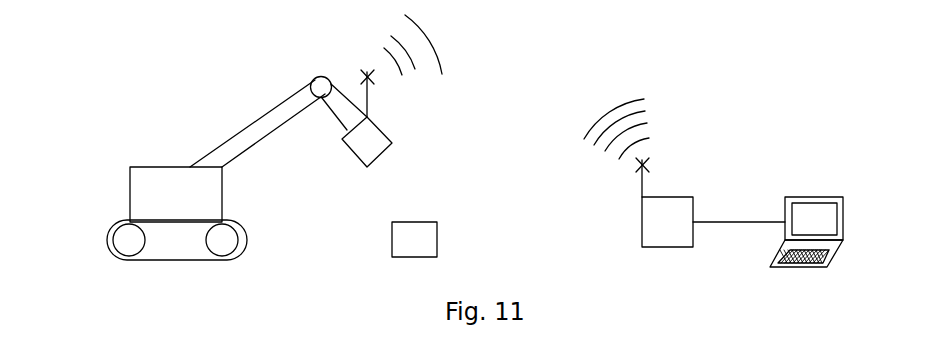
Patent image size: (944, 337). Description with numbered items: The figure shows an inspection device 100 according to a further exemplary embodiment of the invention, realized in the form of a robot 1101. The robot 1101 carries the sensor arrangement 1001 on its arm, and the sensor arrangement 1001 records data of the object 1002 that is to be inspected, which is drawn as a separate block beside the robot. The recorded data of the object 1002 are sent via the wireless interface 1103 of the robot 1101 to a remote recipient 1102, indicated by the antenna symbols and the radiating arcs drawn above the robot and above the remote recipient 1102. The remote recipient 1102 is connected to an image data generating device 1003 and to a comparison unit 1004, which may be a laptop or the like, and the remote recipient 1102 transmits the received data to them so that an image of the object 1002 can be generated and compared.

The inspection device 100 is at (127, 124).
The robot 1101 is at (140, 195).
The wireless interface 1103 is at (358, 97).
The sensor arrangement 1001 is at (393, 142).
The object to be inspected 1002 is at (491, 222).
The remote recipient 1102 is at (655, 227).
The comparison unit 1004 is at (812, 197).
The image data generating device 1003 is at (806, 232).